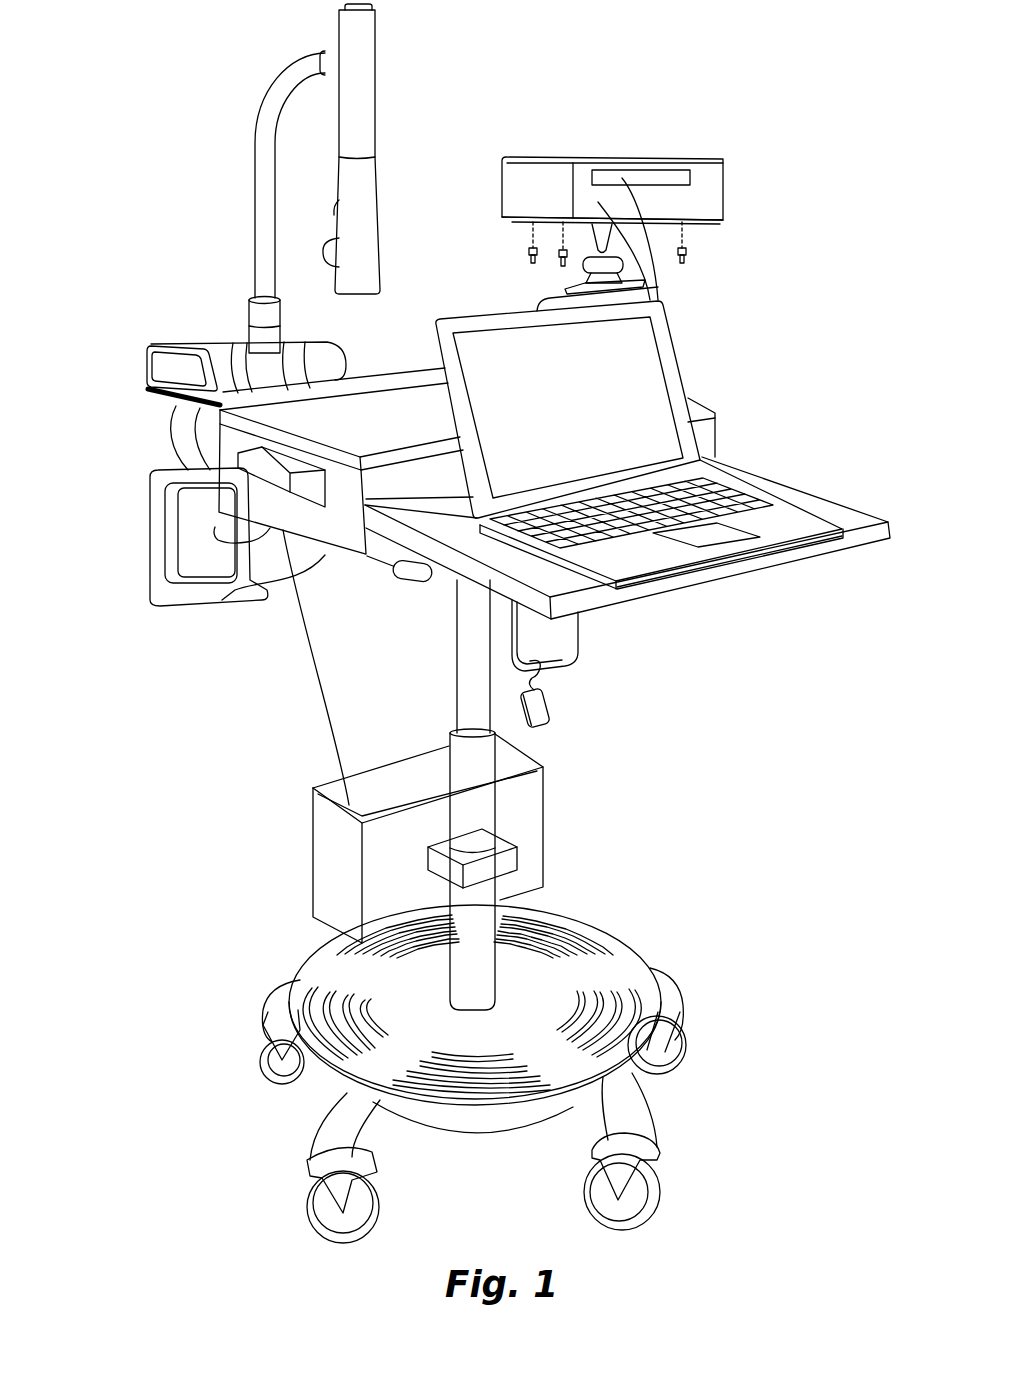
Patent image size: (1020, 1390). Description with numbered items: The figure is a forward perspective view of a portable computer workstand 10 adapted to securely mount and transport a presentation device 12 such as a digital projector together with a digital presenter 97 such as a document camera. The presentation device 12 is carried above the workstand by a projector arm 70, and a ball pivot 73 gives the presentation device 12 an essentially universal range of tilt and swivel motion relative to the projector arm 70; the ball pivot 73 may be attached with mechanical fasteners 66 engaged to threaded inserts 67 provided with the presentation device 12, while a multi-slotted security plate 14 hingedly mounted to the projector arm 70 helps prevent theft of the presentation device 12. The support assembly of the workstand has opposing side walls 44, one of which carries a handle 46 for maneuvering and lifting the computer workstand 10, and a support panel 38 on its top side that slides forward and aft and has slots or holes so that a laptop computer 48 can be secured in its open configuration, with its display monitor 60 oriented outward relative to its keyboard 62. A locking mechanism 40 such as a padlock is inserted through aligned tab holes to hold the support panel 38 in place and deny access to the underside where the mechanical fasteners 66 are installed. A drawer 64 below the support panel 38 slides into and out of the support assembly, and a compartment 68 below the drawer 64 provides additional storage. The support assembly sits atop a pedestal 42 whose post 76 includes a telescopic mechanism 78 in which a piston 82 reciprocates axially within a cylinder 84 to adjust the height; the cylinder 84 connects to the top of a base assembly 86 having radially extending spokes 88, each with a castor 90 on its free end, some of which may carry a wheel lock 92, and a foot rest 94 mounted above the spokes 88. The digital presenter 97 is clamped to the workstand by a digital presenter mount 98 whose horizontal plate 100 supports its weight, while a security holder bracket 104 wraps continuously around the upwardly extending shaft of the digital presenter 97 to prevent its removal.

The computer workstand 10 is at (190, 795).
The presentation device 12 is at (717, 170).
The multi-slotted security plate 14 is at (692, 224).
The support panel 38 is at (385, 429).
The locking mechanism 40 is at (553, 692).
The pedestal 42 is at (568, 753).
The side walls 44 is at (353, 536).
The handle 46 is at (235, 440).
The laptop computer 48 is at (657, 573).
The display monitor 60 is at (588, 421).
The keyboard 62 is at (722, 492).
The drawer 64 is at (847, 560).
The mechanical fasteners 66 is at (688, 264).
The threaded inserts 67 is at (530, 222).
The compartment 68 is at (378, 550).
The projector arm 70 is at (547, 300).
The ball pivot 73 is at (595, 236).
The post 76 is at (418, 592).
The telescopic mechanism 78 is at (490, 797).
The piston 82 is at (462, 633).
The cylinder 84 is at (482, 818).
The base assembly 86 is at (732, 965).
The spokes 88 is at (312, 1127).
The castor 90 is at (315, 1228).
The wheel lock 92 is at (275, 1030).
The foot rest 94 is at (593, 923).
The digital presenter 97 is at (372, 86).
The digital presenter mount 98 is at (132, 355).
The horizontal plate 100 is at (162, 392).
The security holder bracket 104 is at (242, 342).